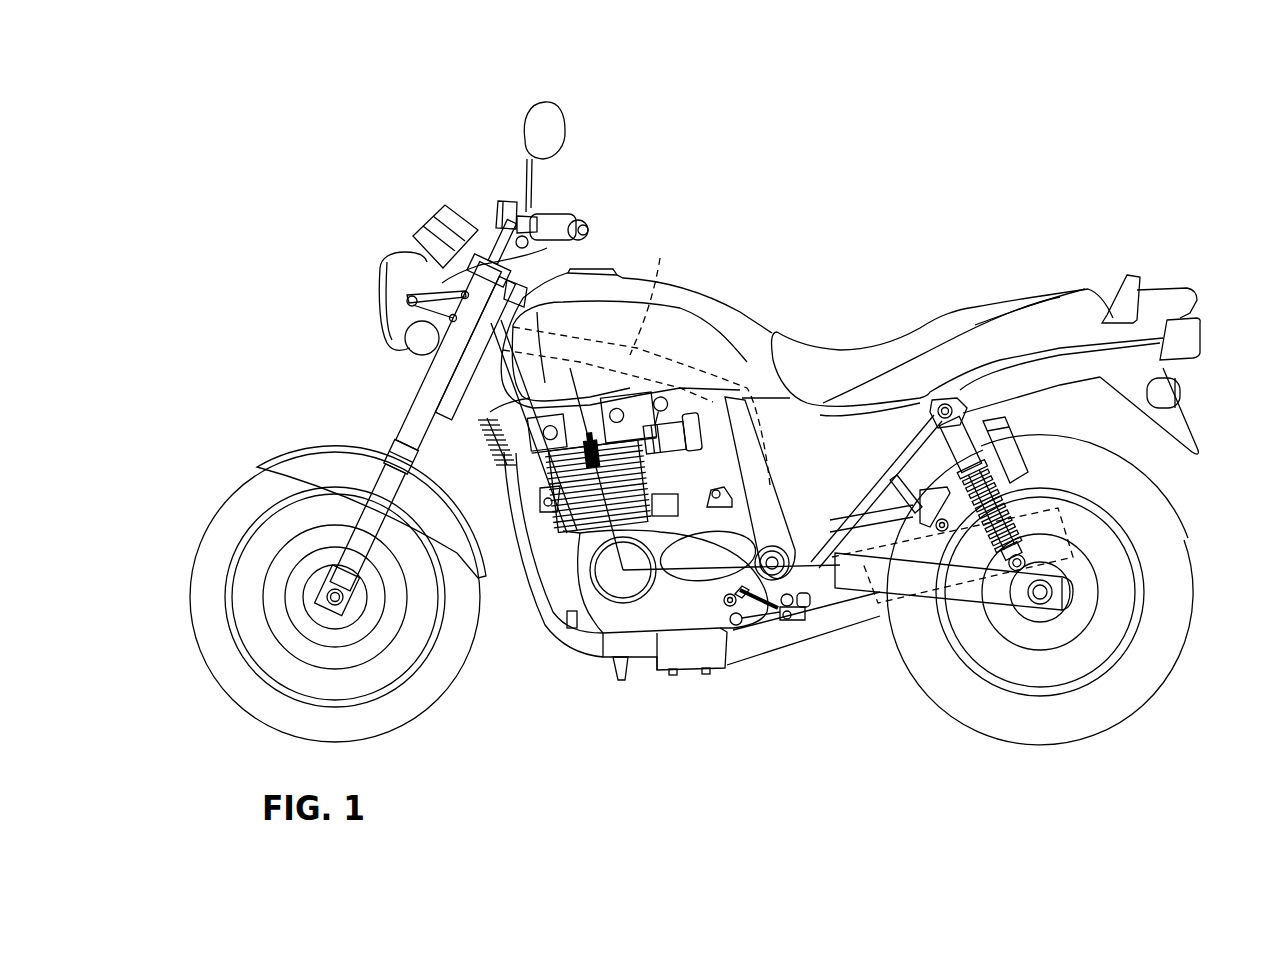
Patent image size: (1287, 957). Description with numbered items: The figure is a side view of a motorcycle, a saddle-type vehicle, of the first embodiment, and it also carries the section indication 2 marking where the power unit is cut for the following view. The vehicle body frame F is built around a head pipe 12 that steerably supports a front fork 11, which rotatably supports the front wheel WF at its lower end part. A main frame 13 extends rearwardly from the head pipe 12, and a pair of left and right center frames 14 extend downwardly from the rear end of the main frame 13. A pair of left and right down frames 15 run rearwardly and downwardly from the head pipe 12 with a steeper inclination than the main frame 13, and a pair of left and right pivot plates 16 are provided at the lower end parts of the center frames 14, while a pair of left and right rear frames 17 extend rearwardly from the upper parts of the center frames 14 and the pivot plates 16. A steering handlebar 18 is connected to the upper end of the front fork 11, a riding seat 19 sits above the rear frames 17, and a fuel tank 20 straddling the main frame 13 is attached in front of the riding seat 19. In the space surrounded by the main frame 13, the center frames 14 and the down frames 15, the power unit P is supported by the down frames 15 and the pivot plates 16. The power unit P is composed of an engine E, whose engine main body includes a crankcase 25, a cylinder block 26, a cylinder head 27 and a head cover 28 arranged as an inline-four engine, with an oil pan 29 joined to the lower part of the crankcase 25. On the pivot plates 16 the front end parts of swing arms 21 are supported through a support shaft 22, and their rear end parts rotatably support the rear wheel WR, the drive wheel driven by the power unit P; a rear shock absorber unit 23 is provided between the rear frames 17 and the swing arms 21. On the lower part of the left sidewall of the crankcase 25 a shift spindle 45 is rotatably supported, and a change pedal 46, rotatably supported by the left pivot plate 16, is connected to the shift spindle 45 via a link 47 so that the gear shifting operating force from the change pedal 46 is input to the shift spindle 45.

The front fork 11 is at (357, 543).
The head pipe 12 is at (437, 364).
The main frame 13 is at (655, 289).
The center frames 14 is at (757, 497).
The down frames 15 is at (530, 463).
The pivot plates 16 is at (760, 527).
The rear frames 17 is at (873, 500).
The steering handlebar 18 is at (570, 222).
The riding seat 19 is at (920, 347).
The fuel tank 20 is at (728, 305).
The swing arms 21 is at (918, 578).
The support shaft 22 is at (768, 605).
The rear shock absorber unit 23 is at (1040, 440).
The crankcase 25 is at (627, 623).
The cylinder block 26 is at (573, 545).
The cylinder head 27 is at (490, 457).
The head cover 28 is at (503, 408).
The oil pan 29 is at (658, 650).
The shift spindle 45 is at (740, 592).
The change pedal 46 is at (752, 625).
The link 47 is at (697, 570).
The section line of FIG. 2 is at (627, 372).
The engine E is at (629, 534).
The vehicle body frame F is at (673, 358).
The power unit P is at (552, 527).
The front wheel WF is at (243, 517).
The rear wheel WR is at (1155, 544).